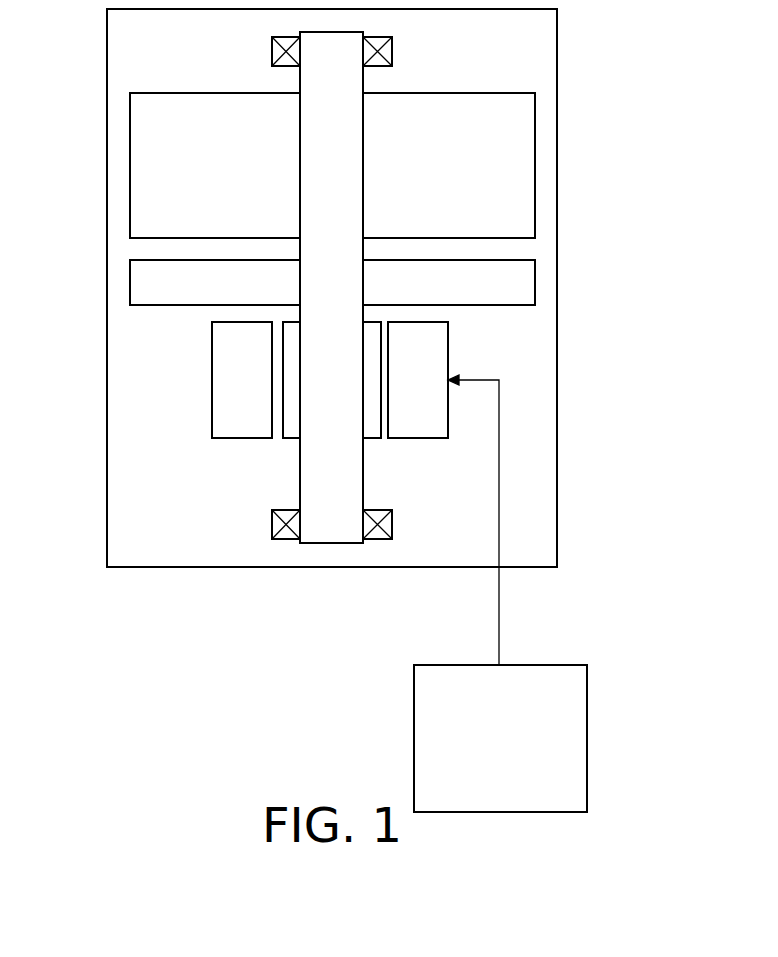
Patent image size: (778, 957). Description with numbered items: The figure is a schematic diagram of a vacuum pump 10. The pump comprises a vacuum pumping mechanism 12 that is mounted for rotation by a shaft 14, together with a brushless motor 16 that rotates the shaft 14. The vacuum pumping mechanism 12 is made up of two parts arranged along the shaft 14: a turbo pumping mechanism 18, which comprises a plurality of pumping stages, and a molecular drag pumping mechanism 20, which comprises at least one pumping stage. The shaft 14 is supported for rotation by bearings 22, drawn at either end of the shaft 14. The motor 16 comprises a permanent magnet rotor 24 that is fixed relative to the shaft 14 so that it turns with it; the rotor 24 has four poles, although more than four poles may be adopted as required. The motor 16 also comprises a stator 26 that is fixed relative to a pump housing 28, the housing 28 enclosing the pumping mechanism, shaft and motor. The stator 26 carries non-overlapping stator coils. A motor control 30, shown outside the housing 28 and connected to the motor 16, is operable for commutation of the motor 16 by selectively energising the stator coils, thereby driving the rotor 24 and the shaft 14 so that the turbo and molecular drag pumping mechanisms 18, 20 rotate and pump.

The vacuum pump 10 is at (328, 410).
The vacuum pumping mechanism 12 is at (371, 199).
The shaft 14 is at (345, 300).
The brushless motor 16 is at (310, 417).
The turbo pumping mechanism 18 is at (463, 177).
The molecular drag pumping mechanism 20 is at (462, 294).
The bearings 22 is at (392, 48).
The permanent magnet rotor 24 is at (370, 440).
The stator 26 is at (256, 392).
The pump housing 28 is at (107, 20).
The motor control 30 is at (514, 750).